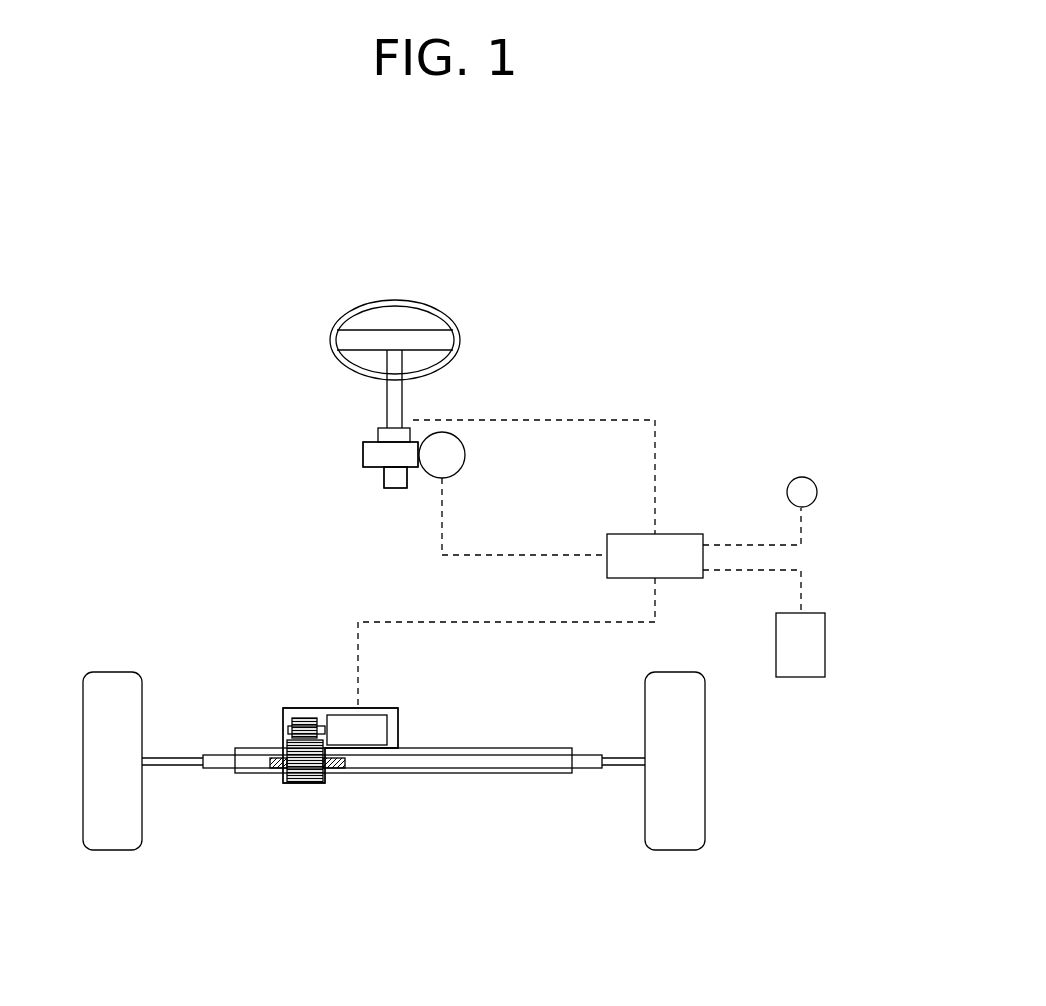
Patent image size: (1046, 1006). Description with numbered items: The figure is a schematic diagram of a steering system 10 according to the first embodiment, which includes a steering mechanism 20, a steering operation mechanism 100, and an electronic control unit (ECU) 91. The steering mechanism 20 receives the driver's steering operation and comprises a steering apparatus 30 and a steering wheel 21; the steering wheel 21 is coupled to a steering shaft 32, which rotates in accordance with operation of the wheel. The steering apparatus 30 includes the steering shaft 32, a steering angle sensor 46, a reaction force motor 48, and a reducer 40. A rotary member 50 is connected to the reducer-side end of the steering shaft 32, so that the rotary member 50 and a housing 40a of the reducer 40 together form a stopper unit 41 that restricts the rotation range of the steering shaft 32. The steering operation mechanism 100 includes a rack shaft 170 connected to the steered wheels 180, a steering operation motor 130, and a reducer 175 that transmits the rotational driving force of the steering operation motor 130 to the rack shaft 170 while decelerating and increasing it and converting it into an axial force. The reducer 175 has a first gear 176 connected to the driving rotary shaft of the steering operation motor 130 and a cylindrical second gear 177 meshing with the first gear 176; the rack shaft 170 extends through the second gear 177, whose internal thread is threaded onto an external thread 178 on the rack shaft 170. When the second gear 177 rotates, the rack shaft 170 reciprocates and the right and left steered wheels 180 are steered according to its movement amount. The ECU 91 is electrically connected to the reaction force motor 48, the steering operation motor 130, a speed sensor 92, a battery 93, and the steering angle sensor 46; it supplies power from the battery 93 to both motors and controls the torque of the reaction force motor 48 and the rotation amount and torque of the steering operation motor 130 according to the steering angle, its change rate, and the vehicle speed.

The steering system 10 is at (685, 282).
The steering mechanism 20 is at (496, 350).
The steering wheel 21 is at (337, 325).
The steering apparatus 30 is at (238, 407).
The steering shaft 32 is at (387, 398).
The reducer 40 is at (345, 488).
The housing 40a is at (363, 453).
The stopper unit 41 is at (380, 510).
The steering angle sensor 46 is at (378, 432).
The reaction force motor 48 is at (466, 455).
The rotary member 50 is at (393, 488).
The electronic control unit 91 is at (687, 534).
The speed sensor 92 is at (805, 477).
The battery 93 is at (805, 677).
The steering operation mechanism 100 is at (382, 897).
The steering operation motor 130 is at (396, 710).
The rack shaft 170 is at (588, 775).
The reducer 175 is at (273, 790).
The first gear 176 is at (302, 718).
The second gear 177 is at (302, 783).
The external thread 178 is at (340, 770).
The steered wheels 180 is at (113, 850).